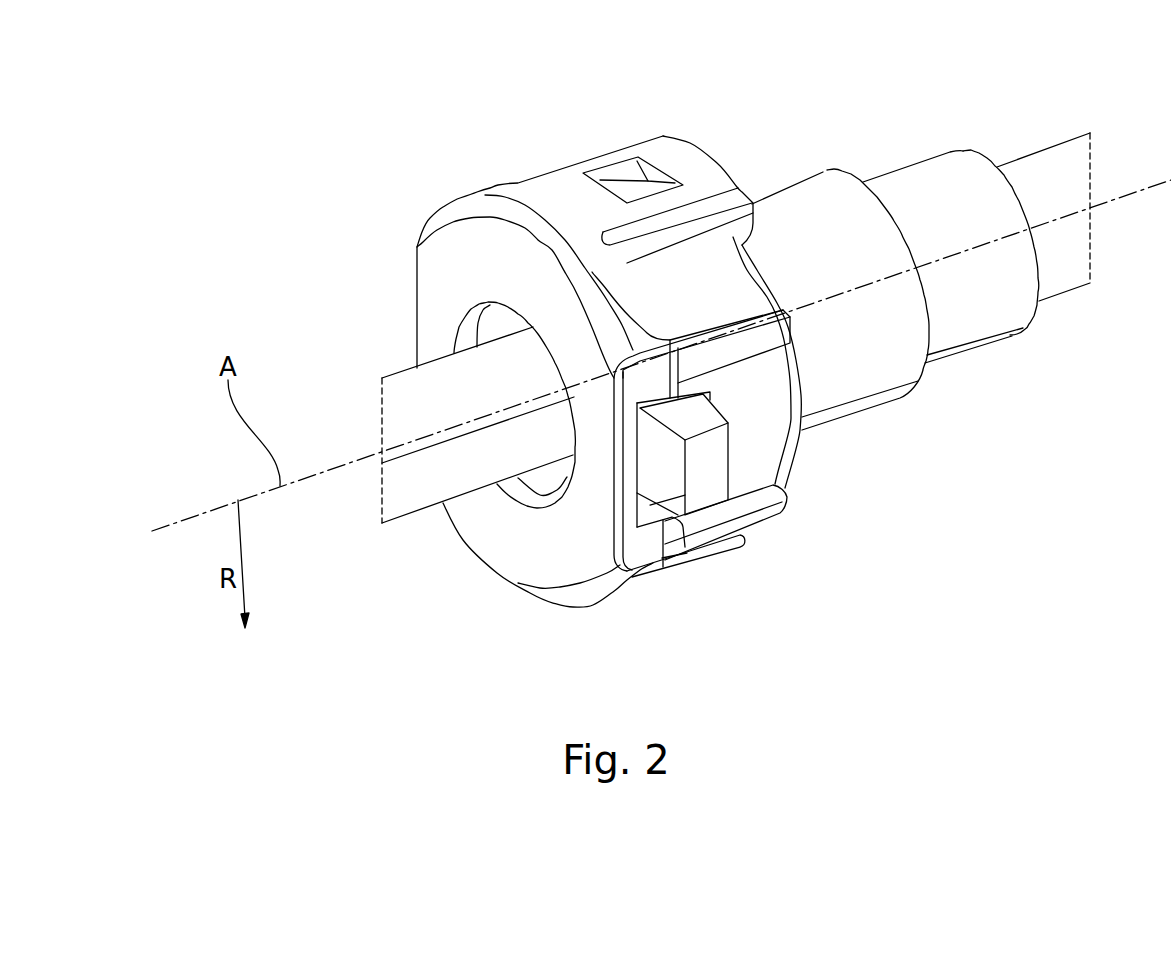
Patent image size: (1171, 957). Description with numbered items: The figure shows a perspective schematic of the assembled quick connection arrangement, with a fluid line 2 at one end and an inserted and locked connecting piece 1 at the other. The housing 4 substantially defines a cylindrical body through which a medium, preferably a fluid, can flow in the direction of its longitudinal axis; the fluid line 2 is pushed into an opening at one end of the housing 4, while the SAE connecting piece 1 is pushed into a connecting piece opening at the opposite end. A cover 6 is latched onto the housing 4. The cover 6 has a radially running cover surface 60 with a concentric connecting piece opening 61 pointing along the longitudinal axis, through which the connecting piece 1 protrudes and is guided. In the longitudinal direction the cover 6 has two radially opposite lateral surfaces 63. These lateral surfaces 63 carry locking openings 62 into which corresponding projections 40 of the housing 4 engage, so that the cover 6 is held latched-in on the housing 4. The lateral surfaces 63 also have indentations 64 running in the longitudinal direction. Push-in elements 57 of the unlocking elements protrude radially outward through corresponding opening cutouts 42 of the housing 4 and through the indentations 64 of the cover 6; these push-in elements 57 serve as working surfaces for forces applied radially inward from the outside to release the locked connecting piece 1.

The connecting piece 1 is at (397, 406).
The fluid line 2 is at (1040, 170).
The housing 4 is at (928, 188).
The cover 6 is at (465, 206).
The projections 40 is at (648, 182).
The opening cutouts 42 is at (710, 400).
The push-in elements 57 is at (785, 507).
The cover surface 60 is at (445, 270).
The connecting piece opening 61 is at (497, 328).
The locking openings 62 is at (605, 172).
The lateral surfaces 63 is at (547, 183).
The indentations 64 is at (665, 520).